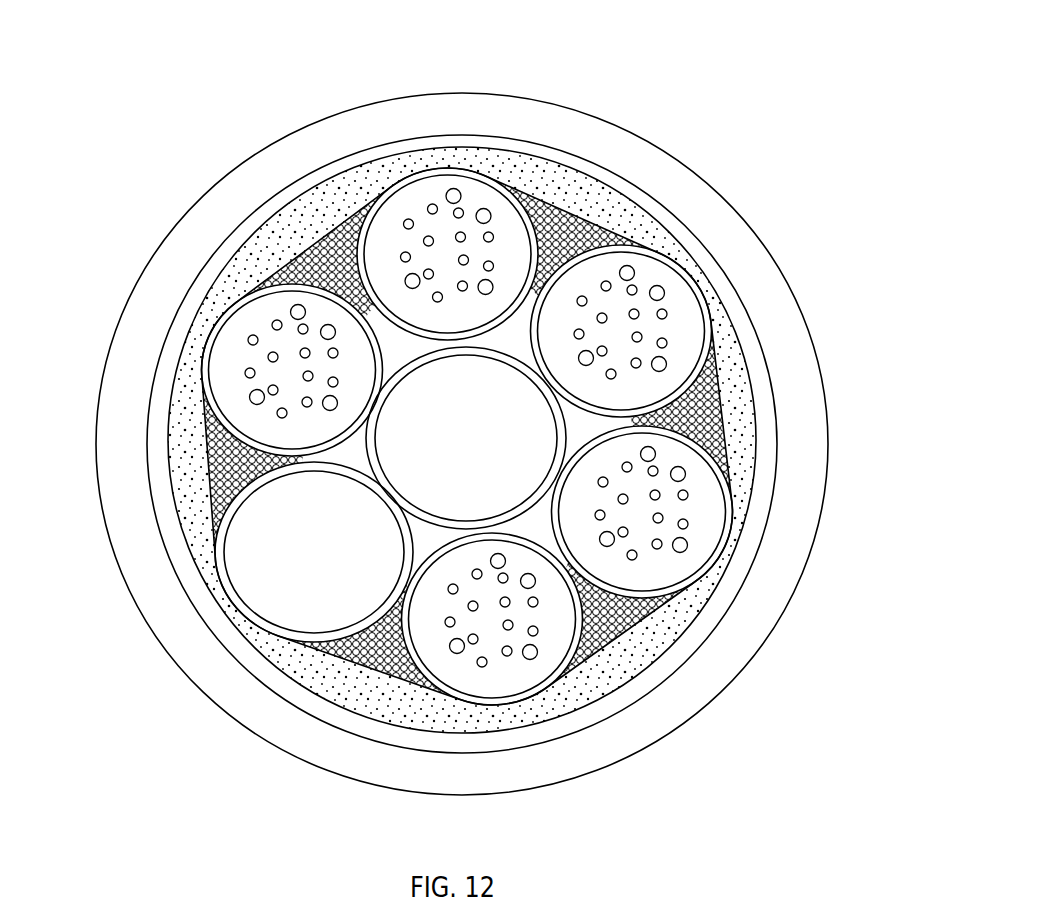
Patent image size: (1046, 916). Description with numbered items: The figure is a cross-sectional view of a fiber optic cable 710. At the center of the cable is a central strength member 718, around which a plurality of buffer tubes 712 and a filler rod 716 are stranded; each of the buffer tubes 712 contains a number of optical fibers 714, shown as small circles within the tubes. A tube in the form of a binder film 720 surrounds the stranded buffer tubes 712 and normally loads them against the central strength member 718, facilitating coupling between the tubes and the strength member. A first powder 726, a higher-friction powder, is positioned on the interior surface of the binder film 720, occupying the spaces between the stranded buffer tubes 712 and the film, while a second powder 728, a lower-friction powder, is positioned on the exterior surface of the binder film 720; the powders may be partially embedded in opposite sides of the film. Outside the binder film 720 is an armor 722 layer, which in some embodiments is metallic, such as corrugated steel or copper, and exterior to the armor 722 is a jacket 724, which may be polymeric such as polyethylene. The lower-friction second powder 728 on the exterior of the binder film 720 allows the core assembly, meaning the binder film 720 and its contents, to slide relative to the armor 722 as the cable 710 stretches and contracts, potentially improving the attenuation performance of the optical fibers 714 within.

The fiber optic cable 710 is at (470, 410).
The buffer tubes 712 is at (557, 436).
The optical fibers 714 is at (688, 497).
The filler rod 716 is at (330, 569).
The central strength member 718 is at (484, 451).
The binder film 720 is at (358, 667).
The armor 722 is at (175, 570).
The jacket 724 is at (108, 532).
The first powder 726 is at (665, 608).
The second powder 728 is at (630, 652).